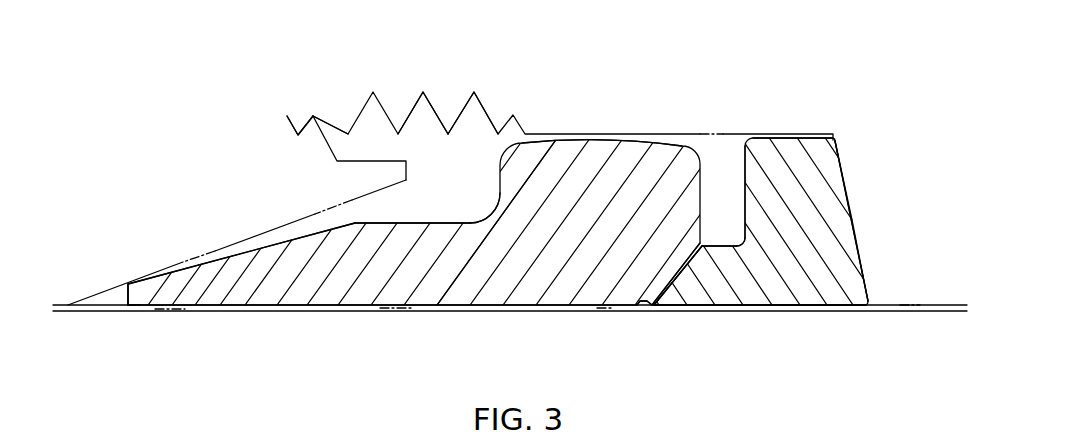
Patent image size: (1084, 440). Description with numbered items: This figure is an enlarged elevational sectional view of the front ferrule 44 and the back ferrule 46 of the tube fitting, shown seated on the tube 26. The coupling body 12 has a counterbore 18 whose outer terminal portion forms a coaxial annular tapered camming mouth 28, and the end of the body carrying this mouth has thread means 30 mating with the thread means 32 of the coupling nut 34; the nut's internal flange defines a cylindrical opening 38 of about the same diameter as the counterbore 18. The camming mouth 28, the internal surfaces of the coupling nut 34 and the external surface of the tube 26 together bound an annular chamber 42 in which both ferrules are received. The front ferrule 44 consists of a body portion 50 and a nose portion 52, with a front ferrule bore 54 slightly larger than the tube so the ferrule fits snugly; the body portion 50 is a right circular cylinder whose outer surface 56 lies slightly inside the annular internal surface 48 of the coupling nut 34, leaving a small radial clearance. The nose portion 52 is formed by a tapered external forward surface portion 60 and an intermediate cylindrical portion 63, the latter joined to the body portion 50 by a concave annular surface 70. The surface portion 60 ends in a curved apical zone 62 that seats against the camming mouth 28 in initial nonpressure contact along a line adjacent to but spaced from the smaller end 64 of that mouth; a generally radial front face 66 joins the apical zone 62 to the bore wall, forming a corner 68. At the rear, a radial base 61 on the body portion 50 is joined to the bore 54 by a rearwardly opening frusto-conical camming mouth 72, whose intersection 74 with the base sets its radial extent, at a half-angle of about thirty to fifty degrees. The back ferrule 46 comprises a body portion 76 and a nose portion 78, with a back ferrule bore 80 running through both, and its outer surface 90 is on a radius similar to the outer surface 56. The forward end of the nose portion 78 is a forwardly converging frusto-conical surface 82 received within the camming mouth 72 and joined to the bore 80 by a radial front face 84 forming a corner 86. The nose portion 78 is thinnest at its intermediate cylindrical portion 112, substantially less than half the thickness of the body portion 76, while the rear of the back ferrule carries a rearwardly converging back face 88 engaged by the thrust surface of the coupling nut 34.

The coupling body 12 is at (375, 160).
The counterbore 18 is at (67, 305).
The tube 26 is at (513, 312).
The camming mouth 28 is at (316, 215).
The thread means 30 is at (310, 122).
The thread means 32 is at (414, 110).
The coupling nut 34 is at (320, 94).
The opening 38 is at (955, 312).
The annular chamber 42 is at (476, 130).
The front ferrule 44 is at (417, 303).
The back ferrule 46 is at (867, 264).
The annular internal surface 48 is at (772, 140).
The body portion 50 is at (663, 155).
The nose portion 52 is at (458, 268).
The front ferrule bore 54 is at (572, 303).
The outer surface 56 is at (621, 141).
The tapered external forward surface portion 60 is at (255, 249).
The radial base 61 is at (706, 162).
The curved apical zone 62 is at (128, 284).
The intermediate cylindrical portion 63 is at (442, 223).
The smaller end 64 is at (67, 312).
The front face 66 is at (127, 298).
The corner 68 is at (124, 305).
The concave annular surface 70 is at (487, 206).
The camming mouth 72 is at (668, 268).
The intersection 74 is at (711, 232).
The body portion 76 is at (830, 197).
The nose portion 78 is at (761, 293).
The back ferrule bore 80 is at (820, 304).
The frusto-conical surface 82 is at (670, 264).
The front face 84 is at (656, 294).
The corner 86 is at (657, 288).
The back face 88 is at (857, 222).
The outer surface 90 is at (808, 140).
The intermediate cylindrical portion 112 is at (733, 240).